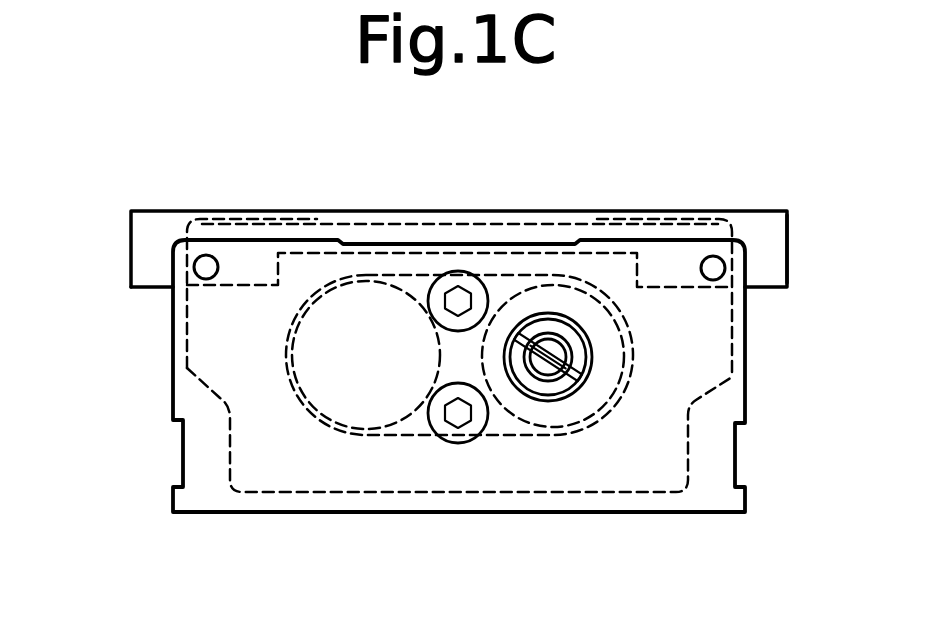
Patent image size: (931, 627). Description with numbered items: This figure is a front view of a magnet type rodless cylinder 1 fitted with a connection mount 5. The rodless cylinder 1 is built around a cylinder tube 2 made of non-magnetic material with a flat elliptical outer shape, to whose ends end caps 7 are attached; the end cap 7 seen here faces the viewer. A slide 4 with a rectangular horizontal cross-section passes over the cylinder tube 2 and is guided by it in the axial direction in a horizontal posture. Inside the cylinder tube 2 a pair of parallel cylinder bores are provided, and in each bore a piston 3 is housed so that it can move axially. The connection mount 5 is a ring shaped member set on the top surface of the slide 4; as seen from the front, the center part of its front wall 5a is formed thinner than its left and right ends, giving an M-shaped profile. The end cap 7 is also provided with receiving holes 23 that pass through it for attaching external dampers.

The magnet type rodless cylinder 1 is at (522, 175).
The cylinder tube 2 is at (351, 437).
The piston 3 is at (383, 404).
The slide 4 is at (218, 358).
The connection mount 5 is at (340, 210).
The front wall 5a is at (761, 232).
The end cap 7 is at (713, 465).
The receiving hole 23 is at (205, 267).